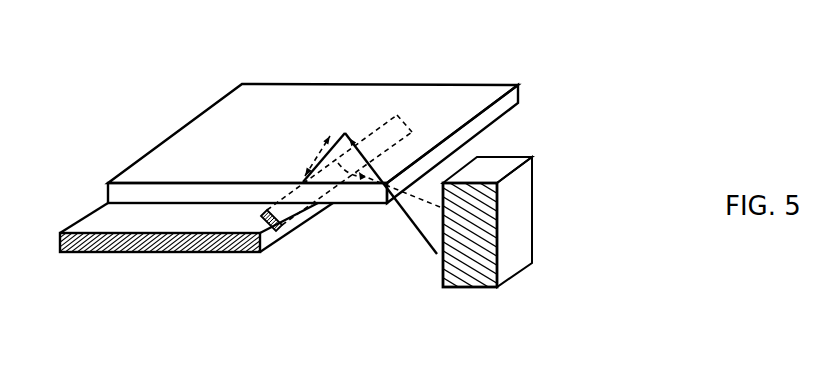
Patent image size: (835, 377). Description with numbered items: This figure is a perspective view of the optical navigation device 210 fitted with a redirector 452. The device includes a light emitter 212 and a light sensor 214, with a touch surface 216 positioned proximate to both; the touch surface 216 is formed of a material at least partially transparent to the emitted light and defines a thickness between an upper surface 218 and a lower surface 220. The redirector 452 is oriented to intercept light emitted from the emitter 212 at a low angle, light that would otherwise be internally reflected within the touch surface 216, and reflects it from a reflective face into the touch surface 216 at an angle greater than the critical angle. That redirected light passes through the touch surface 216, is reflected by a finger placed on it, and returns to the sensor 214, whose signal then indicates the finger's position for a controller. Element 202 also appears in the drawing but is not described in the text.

The optical navigation device 210 is at (101, 304).
The light sensor 214 is at (173, 252).
The touch surface 216 is at (102, 192).
The upper surface 218 is at (255, 110).
The lower surface 220 is at (343, 207).
The light coupling element 202 is at (289, 244).
The redirector 452 is at (390, 118).
The light emitter 212 is at (508, 235).